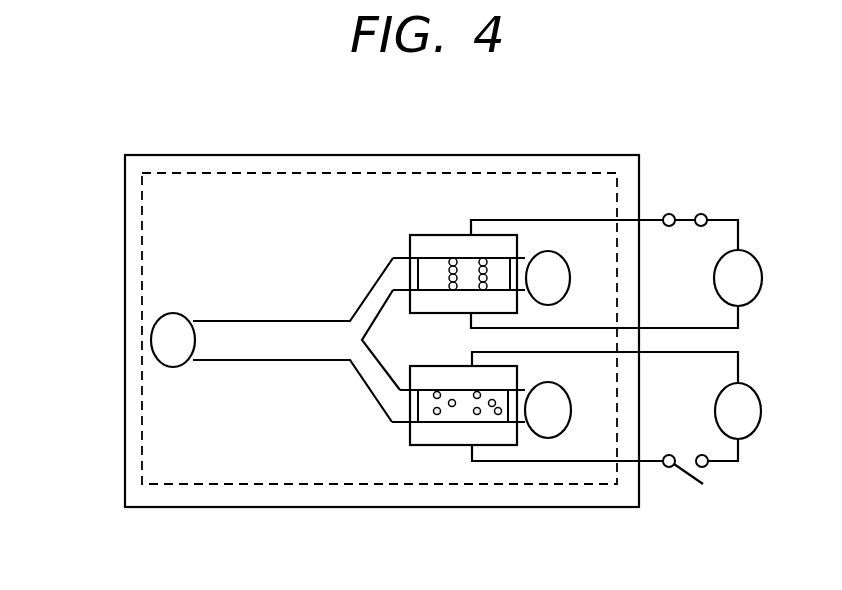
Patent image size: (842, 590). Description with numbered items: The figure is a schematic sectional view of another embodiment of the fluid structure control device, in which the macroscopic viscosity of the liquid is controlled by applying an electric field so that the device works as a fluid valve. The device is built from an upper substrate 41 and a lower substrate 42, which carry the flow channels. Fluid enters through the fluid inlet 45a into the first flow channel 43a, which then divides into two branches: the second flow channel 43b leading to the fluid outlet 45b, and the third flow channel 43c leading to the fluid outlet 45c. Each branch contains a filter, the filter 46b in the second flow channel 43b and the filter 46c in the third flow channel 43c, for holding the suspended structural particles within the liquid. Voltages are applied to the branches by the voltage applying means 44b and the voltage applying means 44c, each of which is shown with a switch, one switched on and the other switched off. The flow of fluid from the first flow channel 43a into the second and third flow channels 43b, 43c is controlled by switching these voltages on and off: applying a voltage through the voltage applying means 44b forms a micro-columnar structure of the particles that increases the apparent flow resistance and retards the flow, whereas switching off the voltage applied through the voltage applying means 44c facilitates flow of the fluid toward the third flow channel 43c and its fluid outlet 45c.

The upper substrate 41 is at (137, 495).
The lower substrate 42 is at (152, 403).
The first flow channel 43a is at (248, 327).
The second flow channel 43b is at (428, 265).
The third flow channel 43c is at (428, 415).
The voltage applying means 44b is at (747, 292).
The voltage applying means 44c is at (747, 425).
The fluid inlet 45a is at (158, 340).
The fluid outlet 45b is at (548, 262).
The fluid outlet 45c is at (548, 427).
The filter 46b is at (408, 273).
The filter 46c is at (408, 412).